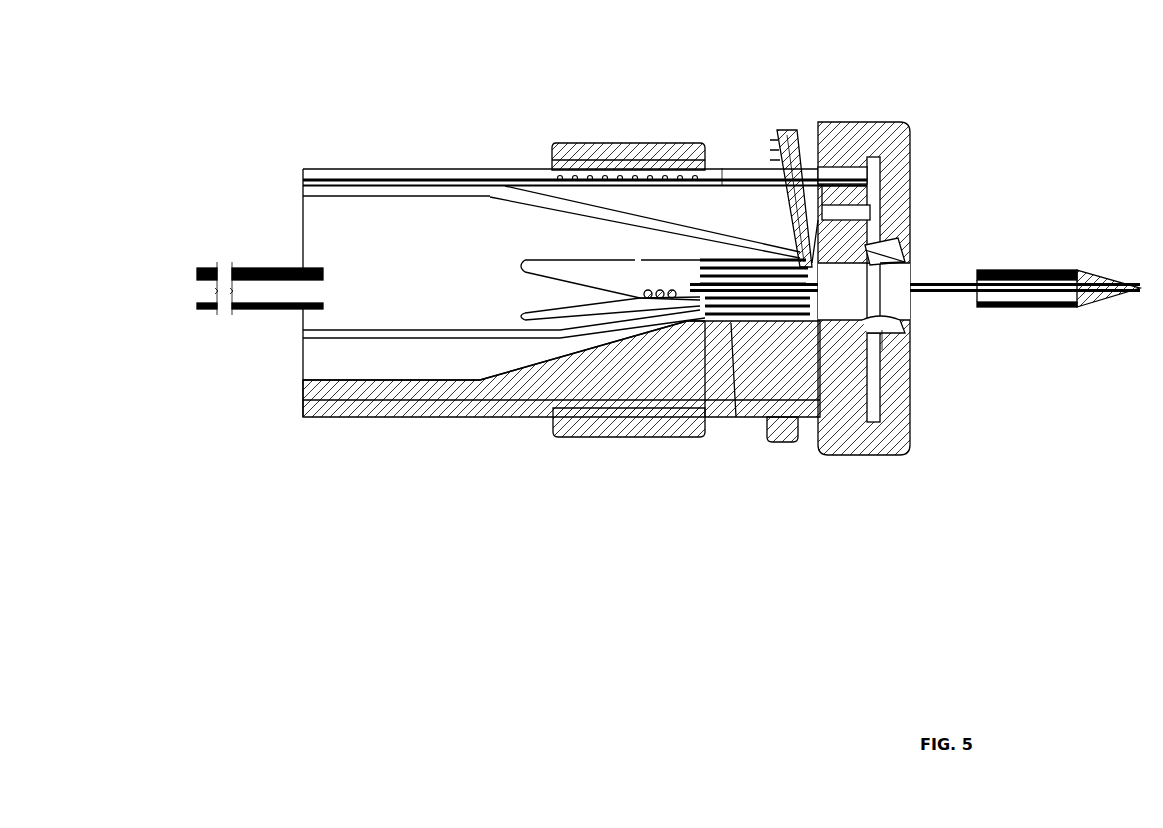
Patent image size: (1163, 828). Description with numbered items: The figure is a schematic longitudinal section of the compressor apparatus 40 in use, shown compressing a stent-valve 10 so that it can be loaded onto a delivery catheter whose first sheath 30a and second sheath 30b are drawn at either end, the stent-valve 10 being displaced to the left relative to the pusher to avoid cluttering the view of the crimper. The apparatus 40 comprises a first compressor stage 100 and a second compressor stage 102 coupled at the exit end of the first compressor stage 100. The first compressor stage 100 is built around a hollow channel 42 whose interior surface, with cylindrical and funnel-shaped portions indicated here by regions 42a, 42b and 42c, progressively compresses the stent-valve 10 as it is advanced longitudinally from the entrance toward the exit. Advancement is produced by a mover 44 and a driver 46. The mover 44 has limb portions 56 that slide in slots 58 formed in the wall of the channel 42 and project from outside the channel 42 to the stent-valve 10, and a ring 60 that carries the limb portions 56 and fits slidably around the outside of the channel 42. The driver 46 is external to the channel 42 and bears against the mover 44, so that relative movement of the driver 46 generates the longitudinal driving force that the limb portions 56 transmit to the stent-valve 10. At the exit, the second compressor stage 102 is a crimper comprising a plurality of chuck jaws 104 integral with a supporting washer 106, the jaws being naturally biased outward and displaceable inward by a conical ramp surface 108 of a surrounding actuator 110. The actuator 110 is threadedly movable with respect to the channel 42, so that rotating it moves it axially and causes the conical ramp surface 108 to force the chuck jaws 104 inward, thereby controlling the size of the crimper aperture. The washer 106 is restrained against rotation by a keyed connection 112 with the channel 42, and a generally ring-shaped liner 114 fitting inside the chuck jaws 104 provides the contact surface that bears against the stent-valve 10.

The stent-valve 10 is at (528, 258).
The first sheath 30a is at (1028, 268).
The second sheath 30b is at (264, 268).
The apparatus 40 is at (420, 52).
The hollow channel 42 is at (337, 169).
The housing first portion 42a is at (360, 378).
The housing tapered portion 42b is at (510, 373).
The housing distal portion 42c is at (735, 324).
The mover 44 is at (783, 130).
The driver 46 is at (640, 435).
The limb portions 56 is at (797, 140).
The slots 58 is at (437, 330).
The ring 60 is at (782, 430).
The first compressor stage 100 is at (297, 653).
The second compressor stage 102 is at (817, 572).
The chuck jaws 104 is at (890, 333).
The washer 106 is at (870, 238).
The conical ramp surface 108 is at (895, 257).
The actuator 110 is at (912, 407).
The keyed connection 112 is at (833, 205).
The liner 114 is at (890, 258).